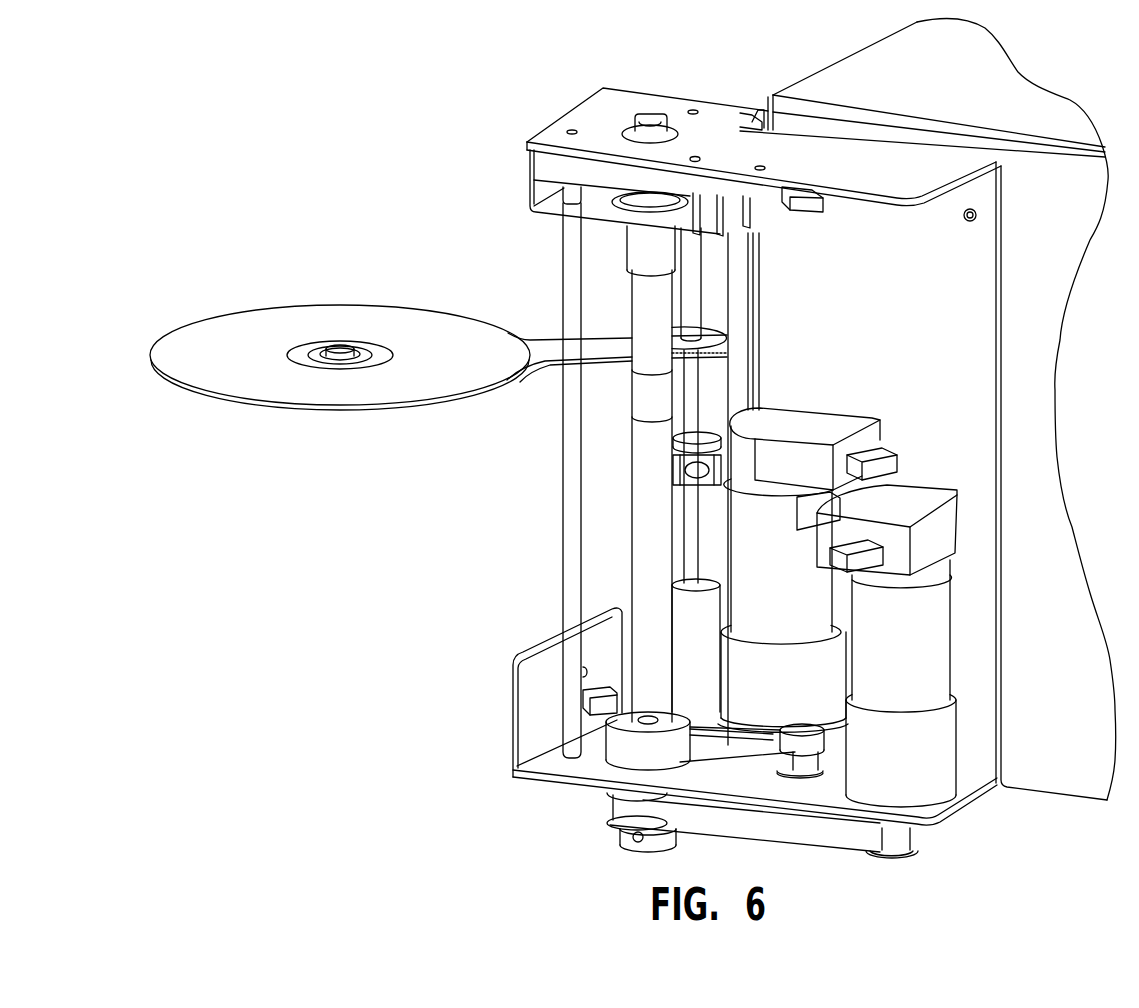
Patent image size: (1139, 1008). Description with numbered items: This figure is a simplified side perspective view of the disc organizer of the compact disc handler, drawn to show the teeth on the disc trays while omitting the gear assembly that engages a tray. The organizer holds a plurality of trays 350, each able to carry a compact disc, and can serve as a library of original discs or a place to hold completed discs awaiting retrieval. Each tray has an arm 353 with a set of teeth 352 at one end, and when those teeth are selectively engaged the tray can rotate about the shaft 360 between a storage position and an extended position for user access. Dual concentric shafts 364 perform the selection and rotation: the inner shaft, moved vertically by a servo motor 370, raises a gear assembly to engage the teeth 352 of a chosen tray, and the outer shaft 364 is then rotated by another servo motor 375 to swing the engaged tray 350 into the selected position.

The tray 350 is at (437, 328).
The teeth 352 is at (733, 373).
The arm 353 is at (605, 347).
The shaft 360 is at (692, 273).
The dual concentric shafts 364 is at (645, 468).
The servo motor 370 is at (920, 493).
The servo motor 375 is at (843, 422).